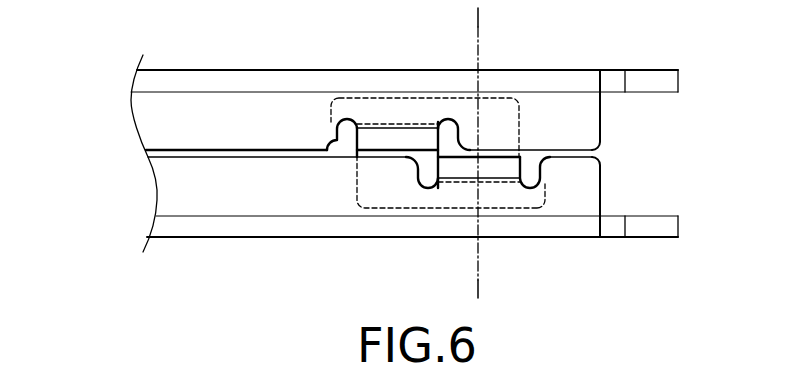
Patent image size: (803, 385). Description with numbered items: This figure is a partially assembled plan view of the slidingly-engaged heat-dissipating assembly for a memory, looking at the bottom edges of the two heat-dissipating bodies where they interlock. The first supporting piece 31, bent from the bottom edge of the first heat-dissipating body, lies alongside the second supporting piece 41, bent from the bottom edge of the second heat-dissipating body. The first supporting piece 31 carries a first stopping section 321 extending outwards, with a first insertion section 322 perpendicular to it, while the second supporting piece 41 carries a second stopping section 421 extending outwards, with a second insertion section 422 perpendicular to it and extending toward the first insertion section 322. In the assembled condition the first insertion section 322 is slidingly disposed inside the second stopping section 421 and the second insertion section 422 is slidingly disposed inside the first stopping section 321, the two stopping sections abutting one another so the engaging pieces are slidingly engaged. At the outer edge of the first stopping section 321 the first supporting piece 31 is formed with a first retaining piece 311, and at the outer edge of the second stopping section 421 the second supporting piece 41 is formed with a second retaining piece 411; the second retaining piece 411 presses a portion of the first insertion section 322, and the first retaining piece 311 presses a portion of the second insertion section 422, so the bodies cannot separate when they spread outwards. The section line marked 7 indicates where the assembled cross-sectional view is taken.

The first supporting piece 31 is at (163, 124).
The second supporting piece 41 is at (180, 190).
The first retaining piece 311 is at (585, 127).
The second retaining piece 411 is at (585, 183).
The first stopping section 321 is at (398, 140).
The second stopping section 421 is at (461, 167).
The second insertion section 422 is at (374, 98).
The first insertion section 322 is at (507, 200).
The section line 7- 7 is at (492, 291).